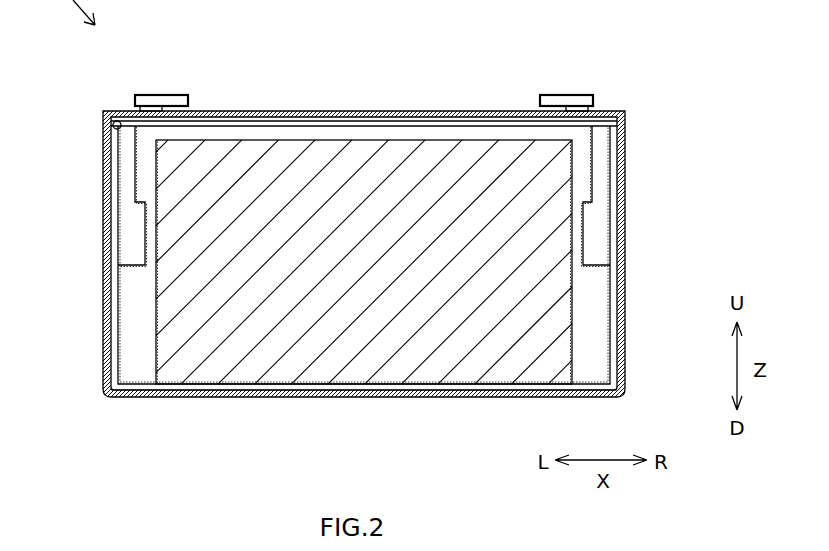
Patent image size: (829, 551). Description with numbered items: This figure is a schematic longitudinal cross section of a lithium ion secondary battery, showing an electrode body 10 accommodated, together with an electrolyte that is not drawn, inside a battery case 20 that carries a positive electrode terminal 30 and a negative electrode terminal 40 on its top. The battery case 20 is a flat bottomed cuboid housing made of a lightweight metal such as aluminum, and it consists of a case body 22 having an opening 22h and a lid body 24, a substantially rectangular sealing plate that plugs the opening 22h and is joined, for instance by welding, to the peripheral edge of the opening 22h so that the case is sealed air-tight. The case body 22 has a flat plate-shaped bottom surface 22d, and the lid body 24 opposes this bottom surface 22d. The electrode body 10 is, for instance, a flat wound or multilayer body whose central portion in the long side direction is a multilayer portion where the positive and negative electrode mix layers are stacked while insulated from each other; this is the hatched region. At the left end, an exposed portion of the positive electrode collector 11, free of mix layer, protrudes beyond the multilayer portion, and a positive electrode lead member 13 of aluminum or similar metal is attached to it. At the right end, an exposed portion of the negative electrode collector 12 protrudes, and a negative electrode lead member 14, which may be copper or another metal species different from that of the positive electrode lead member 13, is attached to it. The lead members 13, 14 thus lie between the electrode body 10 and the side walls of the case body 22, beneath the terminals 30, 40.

The electrode body 10 is at (455, 376).
The positive electrode collector 11 is at (122, 312).
The negative electrode collector 12 is at (604, 311).
The positive electrode lead member 13 is at (122, 236).
The negative electrode lead member 14 is at (606, 236).
The battery case 20 is at (414, 275).
The case body 22 is at (361, 288).
The bottom surface 22d is at (243, 398).
The opening 22h is at (116, 129).
The lid body 24 is at (273, 110).
The positive electrode terminal 30 is at (152, 93).
The negative electrode terminal 40 is at (553, 95).